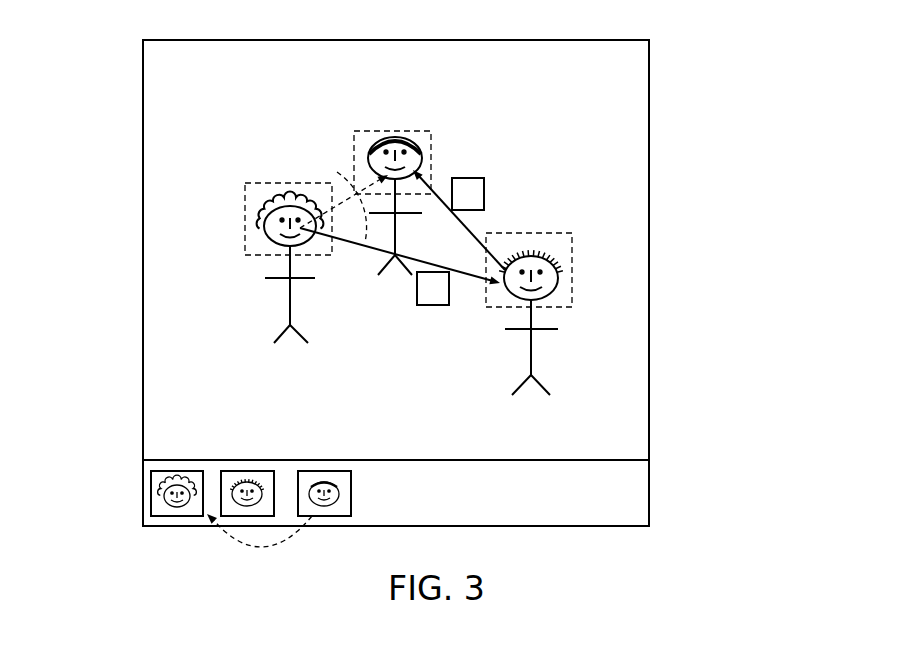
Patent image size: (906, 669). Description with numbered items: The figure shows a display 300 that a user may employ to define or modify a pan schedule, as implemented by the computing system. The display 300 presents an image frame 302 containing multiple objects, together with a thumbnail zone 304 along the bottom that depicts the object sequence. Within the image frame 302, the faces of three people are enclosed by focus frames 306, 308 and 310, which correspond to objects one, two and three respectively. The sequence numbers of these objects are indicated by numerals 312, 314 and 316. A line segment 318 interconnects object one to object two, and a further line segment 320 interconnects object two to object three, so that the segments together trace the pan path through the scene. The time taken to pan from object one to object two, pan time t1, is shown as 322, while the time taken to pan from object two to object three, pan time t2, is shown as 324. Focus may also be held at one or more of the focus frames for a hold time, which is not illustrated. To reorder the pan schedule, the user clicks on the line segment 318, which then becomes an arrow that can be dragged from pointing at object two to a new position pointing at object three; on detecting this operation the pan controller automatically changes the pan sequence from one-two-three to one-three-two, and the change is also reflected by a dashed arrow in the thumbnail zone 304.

The display 300 is at (692, 102).
The image frame 302 is at (143, 93).
The thumbnail zone 304 is at (143, 494).
The focus frame 306 is at (245, 218).
The focus frame 308 is at (535, 233).
The focus frame 310 is at (354, 140).
The sequence number 312 is at (285, 284).
The sequence number 314 is at (528, 340).
The sequence number 316 is at (347, 195).
The line segment 318 is at (470, 278).
The line segment 320 is at (472, 232).
The pan time t1 322 is at (432, 305).
The pan time t2 324 is at (470, 178).